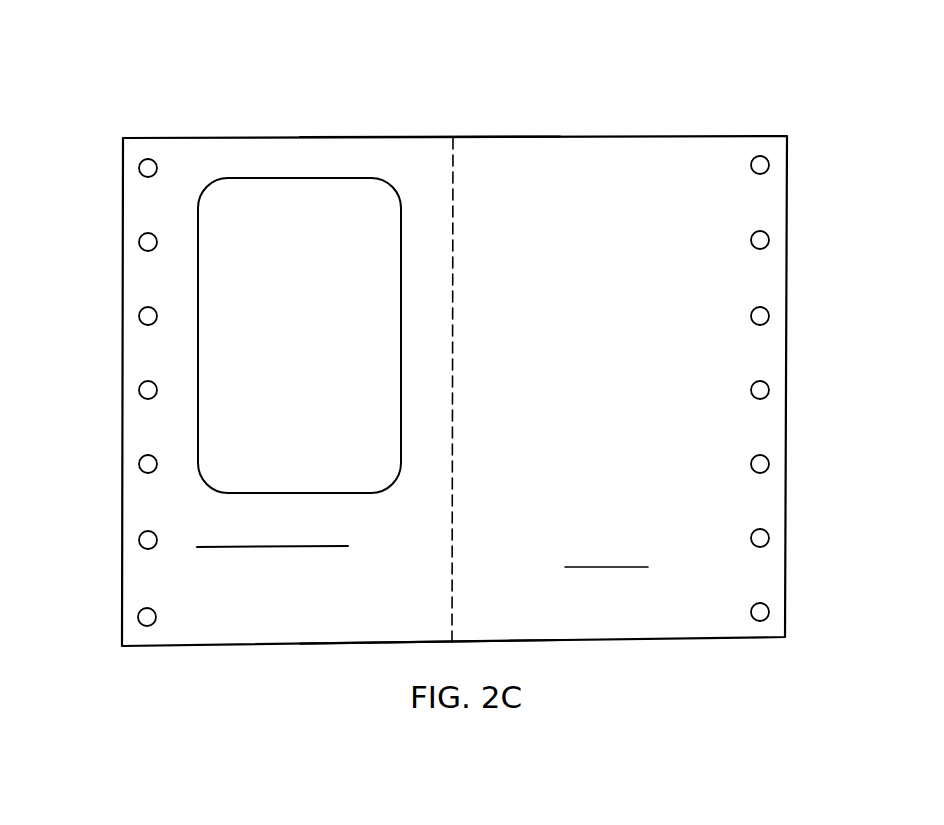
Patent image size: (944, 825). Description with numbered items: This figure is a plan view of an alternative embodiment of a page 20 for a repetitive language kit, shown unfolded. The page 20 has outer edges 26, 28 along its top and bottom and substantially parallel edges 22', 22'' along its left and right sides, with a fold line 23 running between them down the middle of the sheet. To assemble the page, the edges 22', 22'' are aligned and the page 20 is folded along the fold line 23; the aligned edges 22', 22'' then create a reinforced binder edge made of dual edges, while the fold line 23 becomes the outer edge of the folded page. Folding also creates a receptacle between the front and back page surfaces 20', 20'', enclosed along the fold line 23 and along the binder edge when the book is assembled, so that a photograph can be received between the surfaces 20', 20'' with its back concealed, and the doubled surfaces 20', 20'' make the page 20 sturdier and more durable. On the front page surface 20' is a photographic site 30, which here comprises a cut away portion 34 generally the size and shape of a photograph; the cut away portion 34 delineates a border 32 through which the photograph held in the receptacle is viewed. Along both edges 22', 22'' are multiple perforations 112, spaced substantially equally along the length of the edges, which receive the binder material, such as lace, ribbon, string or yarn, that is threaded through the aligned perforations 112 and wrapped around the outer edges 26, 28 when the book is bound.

The page 20 is at (454, 333).
The front page surface 20' is at (279, 334).
The back page surface 20'' is at (635, 328).
The parallel edge 22' is at (99, 354).
The parallel edge 22'' is at (815, 388).
The fold line 23 is at (459, 268).
The outer edge 26 is at (427, 134).
The outer edge 28 is at (402, 648).
The photographic site 30 is at (273, 170).
The border 32 is at (401, 402).
The cut away portion 34 is at (365, 333).
The perforation 112 is at (136, 620).